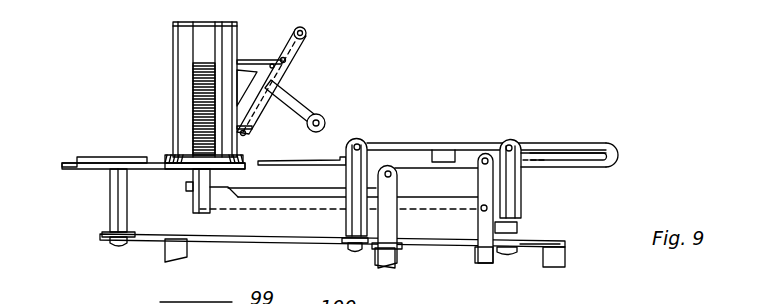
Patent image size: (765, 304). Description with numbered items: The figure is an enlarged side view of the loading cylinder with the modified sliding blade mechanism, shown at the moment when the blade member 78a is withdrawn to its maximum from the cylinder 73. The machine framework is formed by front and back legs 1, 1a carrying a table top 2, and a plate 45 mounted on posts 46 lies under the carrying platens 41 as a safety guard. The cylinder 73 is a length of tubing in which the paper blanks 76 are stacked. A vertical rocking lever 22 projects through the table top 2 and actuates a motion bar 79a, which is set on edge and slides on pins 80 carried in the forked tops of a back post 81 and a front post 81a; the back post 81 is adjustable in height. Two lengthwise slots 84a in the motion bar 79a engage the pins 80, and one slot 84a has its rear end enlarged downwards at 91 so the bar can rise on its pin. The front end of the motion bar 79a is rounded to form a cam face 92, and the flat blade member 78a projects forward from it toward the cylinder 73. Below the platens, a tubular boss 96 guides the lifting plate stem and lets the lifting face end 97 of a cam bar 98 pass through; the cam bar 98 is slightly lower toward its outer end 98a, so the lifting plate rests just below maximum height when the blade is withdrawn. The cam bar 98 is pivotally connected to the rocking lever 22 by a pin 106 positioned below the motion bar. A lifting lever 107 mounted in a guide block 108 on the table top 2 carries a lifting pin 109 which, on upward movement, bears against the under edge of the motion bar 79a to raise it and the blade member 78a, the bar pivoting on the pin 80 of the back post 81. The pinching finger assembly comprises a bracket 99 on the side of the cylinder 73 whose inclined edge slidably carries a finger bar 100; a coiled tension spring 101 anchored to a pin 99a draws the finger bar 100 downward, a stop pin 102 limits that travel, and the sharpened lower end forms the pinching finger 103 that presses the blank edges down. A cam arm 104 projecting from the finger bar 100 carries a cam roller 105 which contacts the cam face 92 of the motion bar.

The cylinder 73 is at (175, 39).
The paper blanks 76 is at (197, 90).
The carrying platens 41 is at (163, 158).
The plate 45 is at (72, 168).
The posts 46 is at (110, 213).
The front legs 1 is at (170, 248).
The back legs 1a is at (562, 262).
The lifting face end 97 is at (228, 187).
The cam bar 98 is at (308, 201).
The tubular boss 96 is at (192, 210).
The outer end 98a is at (188, 184).
The blade member 78a is at (277, 165).
The cam face 92 is at (326, 160).
The enlarged part 91 is at (444, 155).
The front post 81a is at (350, 217).
The lifting pin 109 is at (391, 175).
The lifting lever 107 is at (373, 263).
The guide block 108 is at (400, 249).
The pin 106 is at (483, 210).
The vertical rocking lever 22 is at (482, 255).
The back post 81 is at (512, 193).
The table top 2 is at (532, 243).
The motion bar 79a is at (527, 150).
The lengthwise slots 84a is at (371, 143).
The pins 80 is at (407, 148).
The bracket 99 is at (248, 60).
The finger bar 100 is at (305, 43).
The coiled tension spring 101 is at (304, 36).
The stop pin 102 is at (287, 59).
The pin 99a is at (276, 72).
The cam arm 104 is at (283, 105).
The cam roller 105 is at (328, 113).
The pinching finger 103 is at (246, 135).